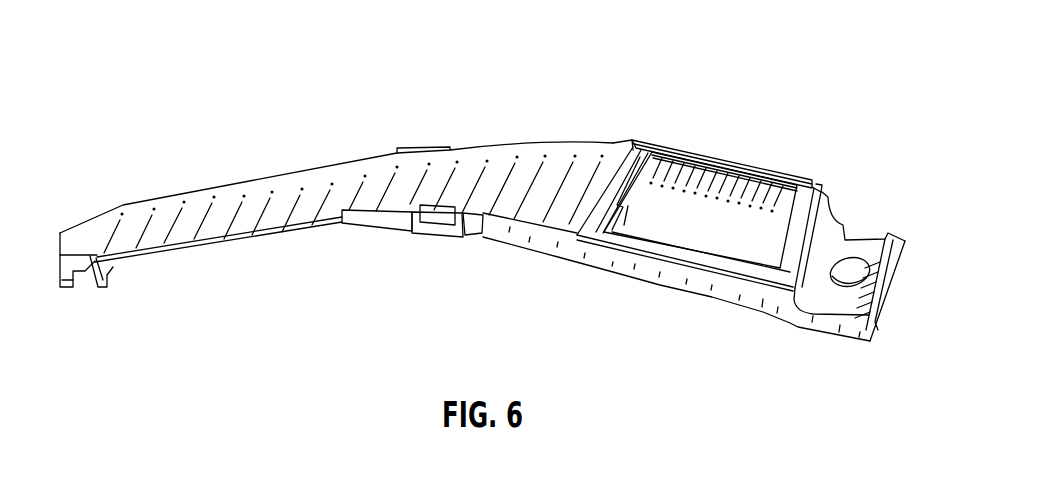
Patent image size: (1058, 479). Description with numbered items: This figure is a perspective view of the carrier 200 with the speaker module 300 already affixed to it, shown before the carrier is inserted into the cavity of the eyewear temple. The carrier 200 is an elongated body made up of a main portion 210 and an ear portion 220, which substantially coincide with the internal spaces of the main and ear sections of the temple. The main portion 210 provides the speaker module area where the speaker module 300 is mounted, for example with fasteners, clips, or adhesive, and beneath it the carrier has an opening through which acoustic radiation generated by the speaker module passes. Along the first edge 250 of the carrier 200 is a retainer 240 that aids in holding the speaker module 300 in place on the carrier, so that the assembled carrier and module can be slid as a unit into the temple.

The carrier 200 is at (502, 264).
The main portion 210 is at (532, 162).
The ear portion 220 is at (228, 206).
The retainer 240 is at (753, 166).
The first edge 250 is at (828, 197).
The speaker module 300 is at (682, 207).